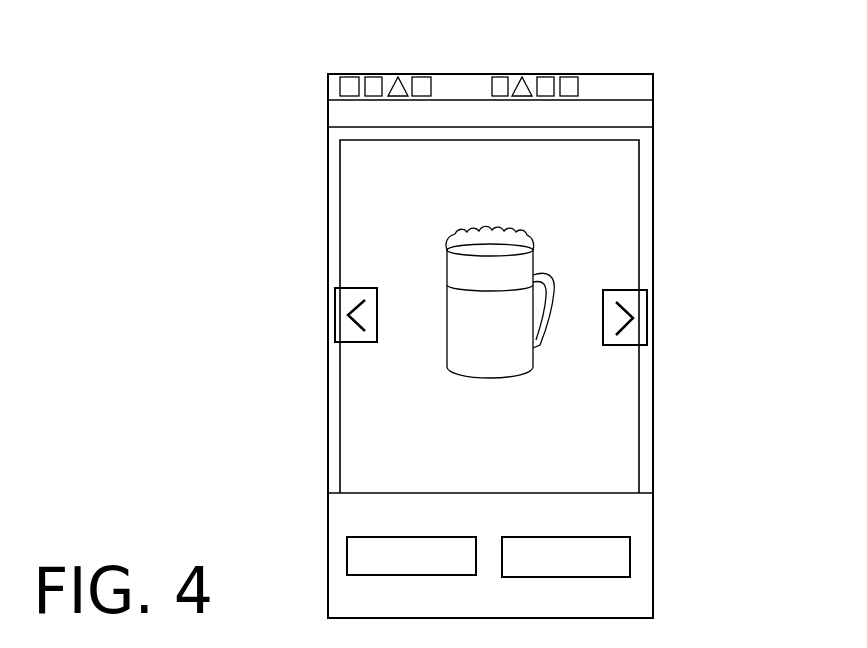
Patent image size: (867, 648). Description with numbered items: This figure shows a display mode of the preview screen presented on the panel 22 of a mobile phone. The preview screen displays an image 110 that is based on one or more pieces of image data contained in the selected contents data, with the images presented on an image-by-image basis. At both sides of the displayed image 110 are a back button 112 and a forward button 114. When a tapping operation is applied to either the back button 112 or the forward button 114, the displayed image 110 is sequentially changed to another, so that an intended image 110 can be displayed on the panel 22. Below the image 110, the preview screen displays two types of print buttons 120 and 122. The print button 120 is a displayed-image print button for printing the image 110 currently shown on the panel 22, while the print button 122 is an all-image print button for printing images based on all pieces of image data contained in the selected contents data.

The panel 22 is at (572, 62).
The image 110 is at (639, 175).
The back button 112 is at (353, 288).
The forward button 114 is at (628, 290).
The print button 120 is at (348, 548).
The print button 122 is at (631, 550).